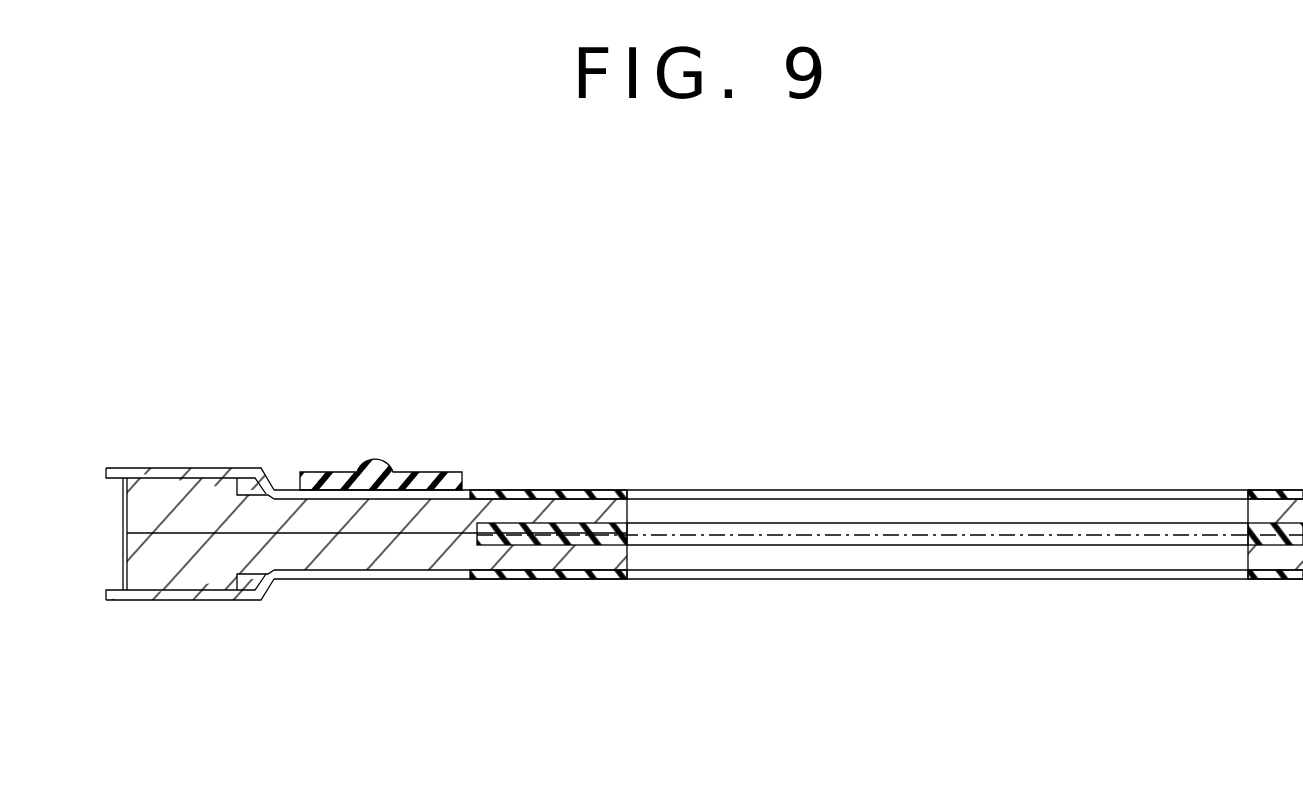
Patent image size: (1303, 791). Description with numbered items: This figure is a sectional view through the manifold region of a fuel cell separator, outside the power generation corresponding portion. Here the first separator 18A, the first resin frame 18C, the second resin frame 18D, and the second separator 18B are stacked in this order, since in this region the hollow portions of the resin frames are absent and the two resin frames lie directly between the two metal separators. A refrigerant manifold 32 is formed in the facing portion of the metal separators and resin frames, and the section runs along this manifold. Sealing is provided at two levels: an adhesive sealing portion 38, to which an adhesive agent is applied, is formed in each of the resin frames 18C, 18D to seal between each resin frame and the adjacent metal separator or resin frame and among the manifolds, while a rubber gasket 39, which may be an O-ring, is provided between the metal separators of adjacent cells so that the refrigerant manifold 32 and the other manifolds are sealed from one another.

The first separator 18A is at (110, 600).
The second separator 18B is at (130, 468).
The first resin frame 18C is at (187, 562).
The second resin frame 18D is at (223, 497).
The refrigerant manifold 32 is at (742, 557).
The adhesive sealing portion 38 is at (537, 499).
The rubber gasket 39 is at (400, 475).